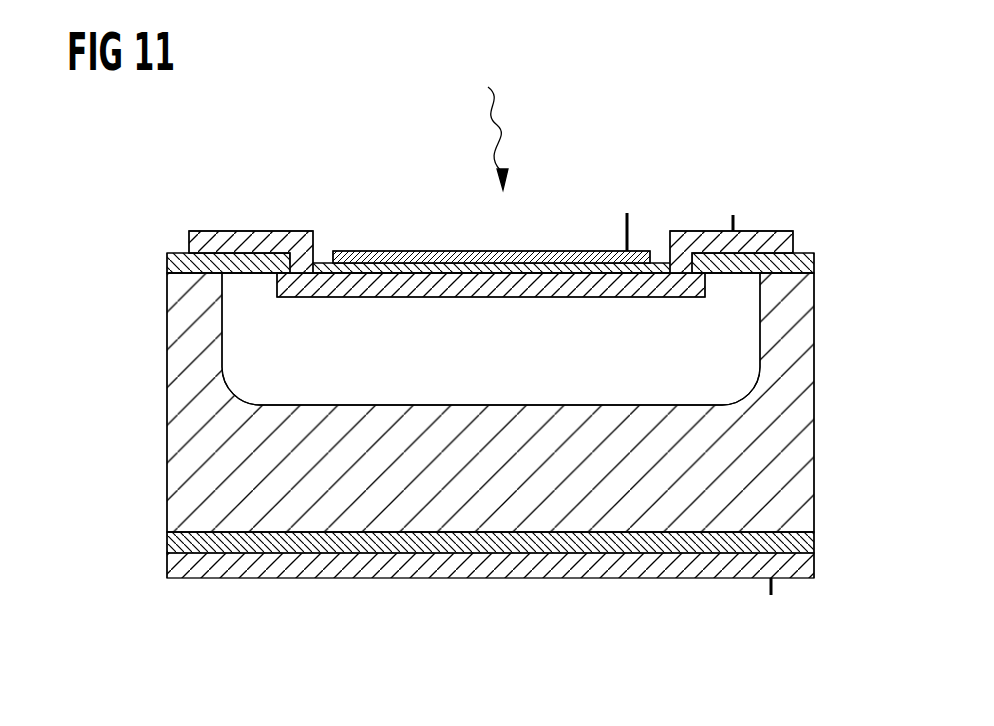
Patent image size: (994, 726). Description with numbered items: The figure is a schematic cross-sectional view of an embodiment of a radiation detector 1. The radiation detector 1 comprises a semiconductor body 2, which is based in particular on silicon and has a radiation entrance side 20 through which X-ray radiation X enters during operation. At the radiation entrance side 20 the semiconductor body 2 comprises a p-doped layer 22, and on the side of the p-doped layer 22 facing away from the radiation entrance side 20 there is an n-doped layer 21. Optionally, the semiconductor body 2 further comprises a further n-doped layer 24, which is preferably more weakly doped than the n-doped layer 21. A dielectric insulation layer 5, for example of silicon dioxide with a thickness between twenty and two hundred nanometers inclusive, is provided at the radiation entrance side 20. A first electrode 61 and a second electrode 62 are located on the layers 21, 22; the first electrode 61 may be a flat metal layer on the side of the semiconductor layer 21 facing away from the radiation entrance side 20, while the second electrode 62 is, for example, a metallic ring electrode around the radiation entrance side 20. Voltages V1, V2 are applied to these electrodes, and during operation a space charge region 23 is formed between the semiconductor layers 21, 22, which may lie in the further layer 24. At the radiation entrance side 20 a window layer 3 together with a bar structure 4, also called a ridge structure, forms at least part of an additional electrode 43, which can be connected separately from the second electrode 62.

The radiation detector 1 is at (478, 374).
The semiconductor body 2 is at (440, 415).
The window layer 3 is at (491, 227).
The bar structure 4 is at (425, 251).
The dielectric insulation layer 5 is at (326, 263).
The radiation entrance side 20 is at (542, 272).
The n-doped layer 21 is at (461, 542).
The p-doped layer 22 is at (293, 292).
The space charge region 23 is at (242, 338).
The further n-doped layer 24 is at (177, 435).
The additional electrode 43 is at (609, 202).
The first electrode 61 is at (484, 572).
The second electrode 62 is at (228, 240).
The voltage V1 is at (771, 595).
The voltage V2 is at (733, 215).
The X-ray radiation X is at (500, 140).